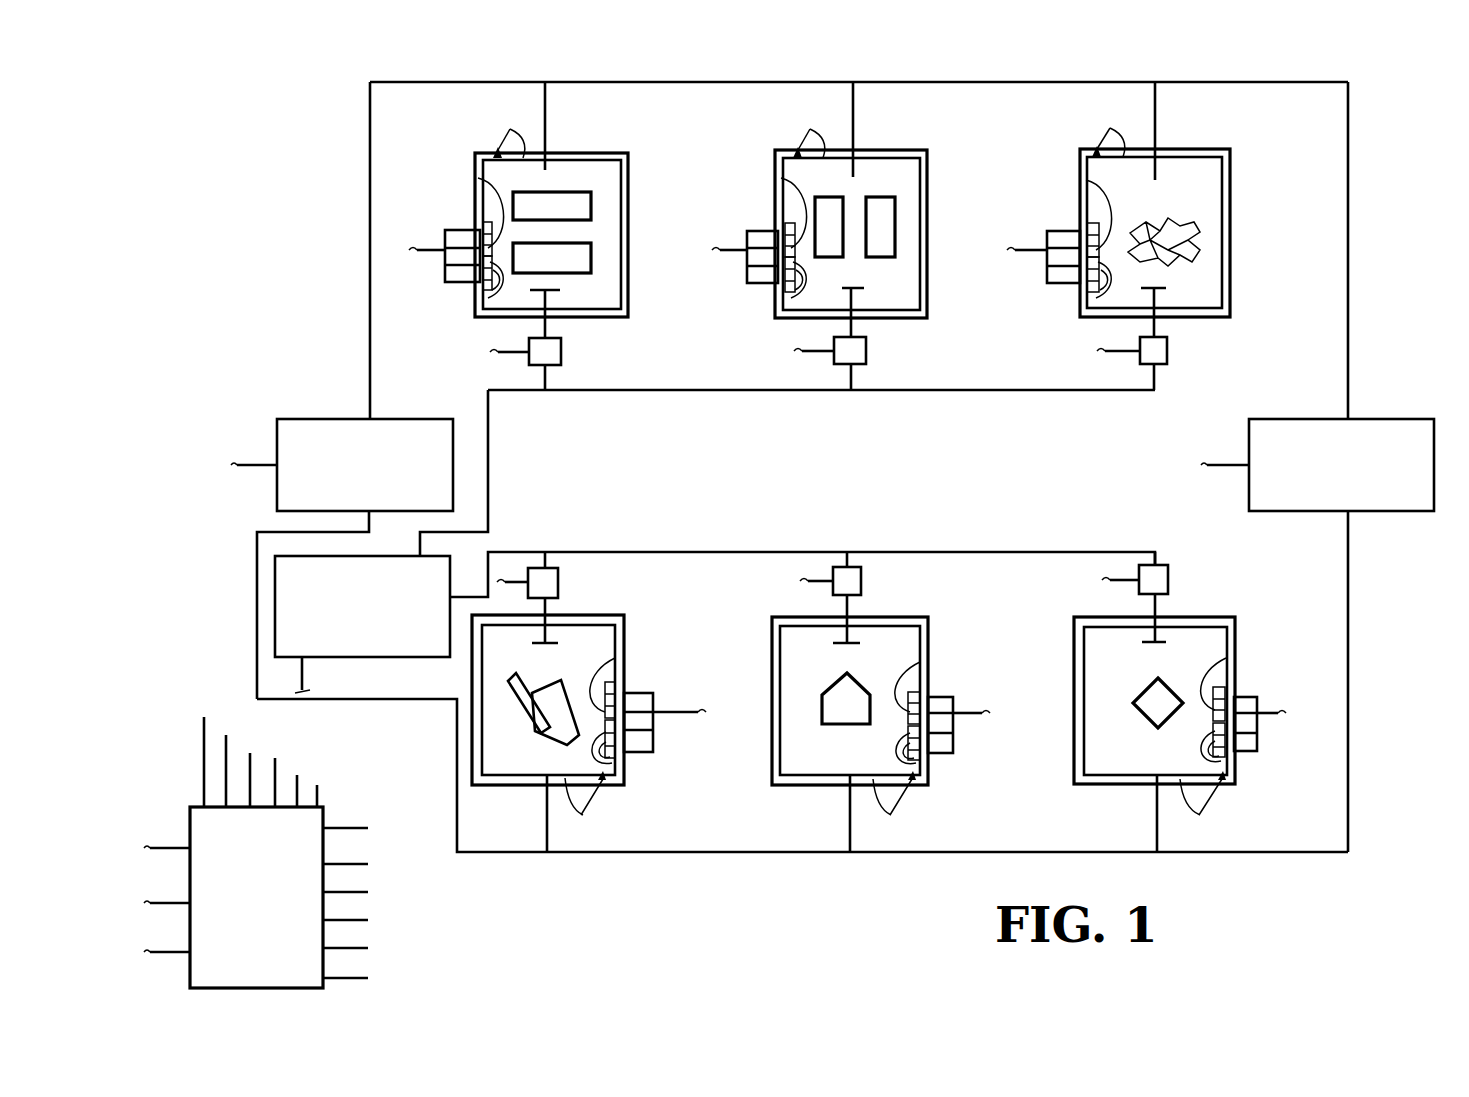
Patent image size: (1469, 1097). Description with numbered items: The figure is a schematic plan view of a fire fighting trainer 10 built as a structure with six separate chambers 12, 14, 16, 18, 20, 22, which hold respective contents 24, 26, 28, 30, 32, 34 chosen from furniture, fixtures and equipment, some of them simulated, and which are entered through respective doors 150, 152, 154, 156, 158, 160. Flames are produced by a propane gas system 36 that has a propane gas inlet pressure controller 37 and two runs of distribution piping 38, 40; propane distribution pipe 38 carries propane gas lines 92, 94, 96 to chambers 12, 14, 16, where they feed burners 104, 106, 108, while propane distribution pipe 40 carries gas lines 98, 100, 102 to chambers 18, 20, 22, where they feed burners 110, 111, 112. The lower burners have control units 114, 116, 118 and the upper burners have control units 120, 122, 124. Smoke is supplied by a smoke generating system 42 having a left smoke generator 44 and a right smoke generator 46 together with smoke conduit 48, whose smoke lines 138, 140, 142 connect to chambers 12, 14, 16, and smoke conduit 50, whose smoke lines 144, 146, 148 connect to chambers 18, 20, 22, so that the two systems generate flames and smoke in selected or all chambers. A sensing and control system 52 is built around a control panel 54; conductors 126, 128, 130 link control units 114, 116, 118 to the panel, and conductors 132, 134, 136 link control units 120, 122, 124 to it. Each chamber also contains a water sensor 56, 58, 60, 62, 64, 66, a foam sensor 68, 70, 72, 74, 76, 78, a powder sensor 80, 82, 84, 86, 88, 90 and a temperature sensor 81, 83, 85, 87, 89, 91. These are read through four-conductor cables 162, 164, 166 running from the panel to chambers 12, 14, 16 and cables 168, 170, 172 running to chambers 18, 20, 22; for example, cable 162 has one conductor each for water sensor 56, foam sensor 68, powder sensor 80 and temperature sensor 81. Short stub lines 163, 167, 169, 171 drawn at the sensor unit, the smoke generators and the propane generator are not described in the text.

The fire fighting trainer 10 is at (1382, 91).
The chamber 12 is at (608, 631).
The chamber 14 is at (910, 631).
The chamber 16 is at (1210, 622).
The chamber 18 is at (616, 272).
The chamber 20 is at (904, 297).
The chamber 22 is at (1205, 294).
The contents 24 is at (529, 729).
The contents 26 is at (848, 726).
The contents 28 is at (1155, 729).
The contents 30 is at (574, 241).
The contents 32 is at (836, 197).
The contents 34 is at (1165, 217).
The propane gas system 36 is at (400, 672).
The propane gas inlet pressure controller 37 is at (399, 554).
The propane distribution pipe 38 is at (815, 520).
The propane distribution pipe 40 is at (742, 392).
The smoke generating system 42 is at (353, 414).
The left smoke generator 44 is at (292, 418).
The right smoke generator 46 is at (1249, 493).
The smoke conduit 48 is at (681, 852).
The smoke conduit 50 is at (777, 82).
The sensing and control system 52 is at (311, 906).
The control panel 54 is at (196, 989).
The water sensor 56 is at (608, 781).
The water sensor 58 is at (916, 781).
The water sensor 60 is at (1226, 781).
The water sensor 62 is at (465, 259).
The water sensor 64 is at (768, 258).
The water sensor 66 is at (1064, 257).
The foam sensor 68 is at (640, 709).
The foam sensor 70 is at (943, 709).
The foam sensor 72 is at (1252, 703).
The foam sensor 74 is at (478, 178).
The foam sensor 76 is at (781, 178).
The foam sensor 78 is at (1086, 186).
The powder sensor 80 is at (608, 681).
The temperature sensor 81 is at (618, 759).
The powder sensor 82 is at (912, 681).
The temperature sensor 83 is at (925, 759).
The powder sensor 84 is at (1220, 672).
The temperature sensor 85 is at (1230, 760).
The powder sensor 86 is at (483, 212).
The temperature sensor 87 is at (483, 297).
The powder sensor 88 is at (785, 212).
The temperature sensor 89 is at (785, 298).
The powder sensor 90 is at (1087, 213).
The temperature sensor 91 is at (1085, 297).
The propane gas line 92 is at (548, 559).
The propane gas line 94 is at (852, 560).
The propane gas line 96 is at (1162, 552).
The propane gas line 98 is at (548, 382).
The propane gas line 100 is at (855, 382).
The propane gas line 102 is at (1159, 382).
The burner 104 is at (554, 648).
The burner 106 is at (858, 648).
The burner 108 is at (1158, 647).
The burner 110 is at (558, 292).
The burner 111 is at (863, 291).
The burner 112 is at (1163, 291).
The control unit 114 is at (558, 589).
The control unit 116 is at (861, 585).
The control unit 118 is at (1168, 580).
The control unit 120 is at (561, 352).
The control unit 122 is at (866, 351).
The control unit 124 is at (1167, 352).
The conductor 126 is at (508, 579).
The conductor 128 is at (810, 578).
The conductor 130 is at (1112, 578).
The conductor 132 is at (496, 353).
The conductor 134 is at (802, 352).
The conductor 136 is at (1106, 352).
The smoke line 138 is at (547, 828).
The smoke line 140 is at (850, 827).
The smoke line 142 is at (1157, 827).
The smoke line 144 is at (549, 136).
The smoke line 146 is at (856, 128).
The smoke line 148 is at (1158, 124).
The door 150 is at (596, 800).
The door 152 is at (904, 800).
The door 154 is at (1207, 800).
The door 156 is at (506, 134).
The door 158 is at (804, 134).
The door 160 is at (1102, 146).
The cable 162 is at (699, 715).
The sensor signal line 163 is at (422, 252).
The cable 164 is at (983, 716).
The cable 166 is at (1279, 716).
The smoke generator control line 167 is at (258, 462).
The cable 168 is at (276, 762).
The smoke generator control line 169 is at (1220, 462).
The cable 170 is at (724, 251).
The propane generator control line 171 is at (305, 673).
The cable 172 is at (1010, 252).